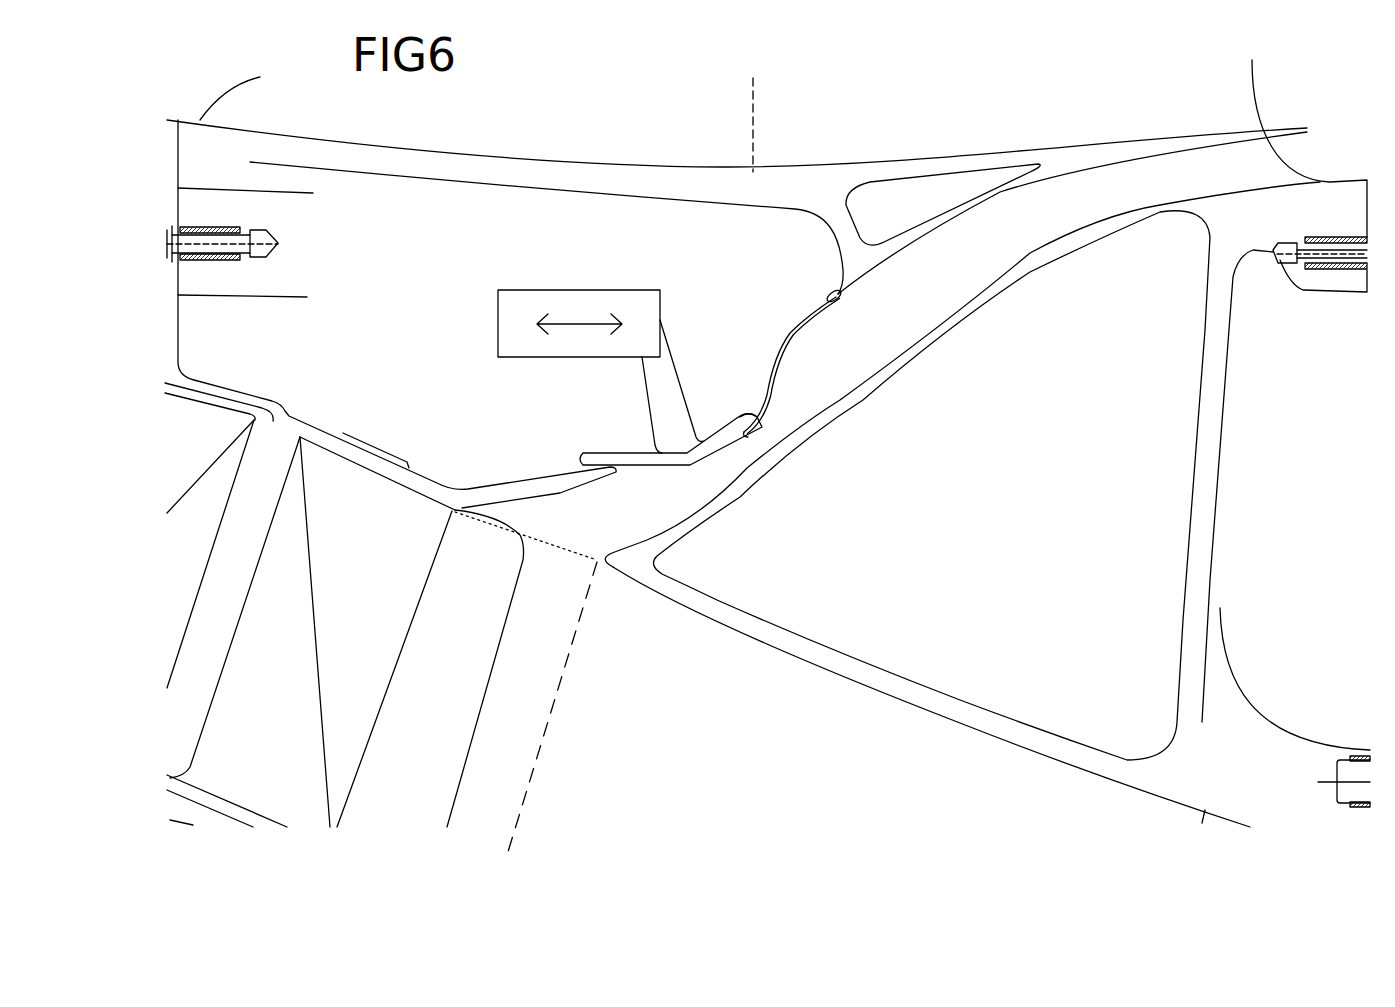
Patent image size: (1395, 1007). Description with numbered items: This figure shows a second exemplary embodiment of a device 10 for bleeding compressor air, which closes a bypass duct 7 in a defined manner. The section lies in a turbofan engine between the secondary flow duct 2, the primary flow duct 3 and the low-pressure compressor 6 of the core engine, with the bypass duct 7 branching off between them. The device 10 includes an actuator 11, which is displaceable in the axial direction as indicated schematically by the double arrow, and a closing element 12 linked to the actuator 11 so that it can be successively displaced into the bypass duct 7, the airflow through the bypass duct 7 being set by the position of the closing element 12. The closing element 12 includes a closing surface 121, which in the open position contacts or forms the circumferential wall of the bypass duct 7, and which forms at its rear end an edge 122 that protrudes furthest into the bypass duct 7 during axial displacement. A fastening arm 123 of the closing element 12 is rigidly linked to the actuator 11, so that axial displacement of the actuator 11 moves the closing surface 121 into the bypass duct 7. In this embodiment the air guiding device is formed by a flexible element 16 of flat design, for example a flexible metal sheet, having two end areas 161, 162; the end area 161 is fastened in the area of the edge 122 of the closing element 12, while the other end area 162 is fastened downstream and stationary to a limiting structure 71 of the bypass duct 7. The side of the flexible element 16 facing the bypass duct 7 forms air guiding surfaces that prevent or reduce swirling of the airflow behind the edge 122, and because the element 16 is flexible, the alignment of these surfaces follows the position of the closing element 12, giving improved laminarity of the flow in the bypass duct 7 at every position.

The secondary flow duct 2 is at (1019, 104).
The primary flow duct 3 is at (662, 722).
The low-pressure compressor 6 is at (372, 607).
The bypass duct 7 is at (908, 320).
The device 10 is at (443, 296).
The actuator 11 is at (557, 290).
The closing element 12 is at (669, 411).
The flexible element 16 is at (826, 396).
The limiting structure 71 is at (867, 260).
The closing surface 121 is at (710, 443).
The edge 122 is at (752, 408).
The fastening arm 123 is at (665, 383).
The end area 161 is at (755, 436).
The end area 162 is at (841, 299).